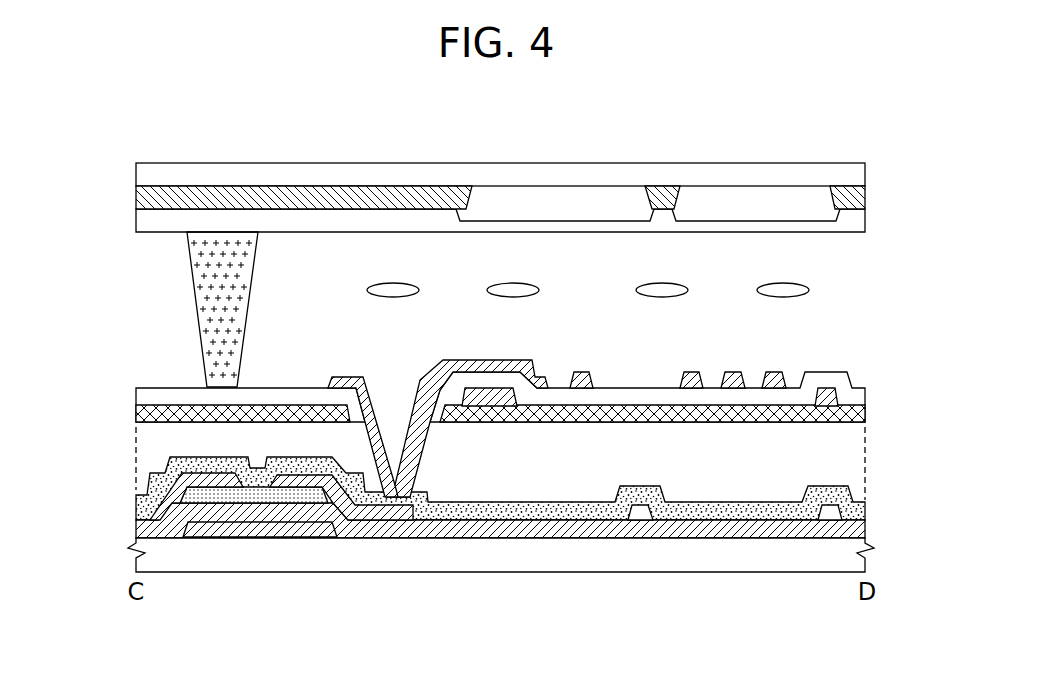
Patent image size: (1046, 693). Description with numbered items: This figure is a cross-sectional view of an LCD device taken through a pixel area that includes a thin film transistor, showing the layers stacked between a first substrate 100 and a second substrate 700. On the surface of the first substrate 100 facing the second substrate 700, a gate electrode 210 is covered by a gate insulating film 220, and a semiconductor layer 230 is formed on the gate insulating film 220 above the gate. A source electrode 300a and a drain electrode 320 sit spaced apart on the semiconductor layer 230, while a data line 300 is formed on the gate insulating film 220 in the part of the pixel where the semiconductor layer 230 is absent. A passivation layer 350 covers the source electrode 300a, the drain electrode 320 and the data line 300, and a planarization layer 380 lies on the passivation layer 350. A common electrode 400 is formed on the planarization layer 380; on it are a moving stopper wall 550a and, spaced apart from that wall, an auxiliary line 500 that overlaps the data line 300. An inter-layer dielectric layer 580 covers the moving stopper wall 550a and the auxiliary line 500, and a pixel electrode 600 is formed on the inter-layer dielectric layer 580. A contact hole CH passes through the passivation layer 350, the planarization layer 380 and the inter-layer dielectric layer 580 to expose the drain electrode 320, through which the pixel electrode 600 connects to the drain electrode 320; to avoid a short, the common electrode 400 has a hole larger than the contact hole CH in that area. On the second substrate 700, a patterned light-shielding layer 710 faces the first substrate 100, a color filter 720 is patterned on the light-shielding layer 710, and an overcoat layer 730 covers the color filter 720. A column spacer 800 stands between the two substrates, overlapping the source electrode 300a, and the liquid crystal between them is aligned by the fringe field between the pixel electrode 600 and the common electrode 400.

The first substrate 100 is at (853, 553).
The gate electrode 210 is at (260, 532).
The gate insulating film 220 is at (853, 528).
The semiconductor layer 230 is at (278, 497).
The data line 300 is at (638, 510).
The source electrode 300a is at (172, 502).
The drain electrode 320 is at (387, 515).
The contact hole CH is at (413, 470).
The passivation layer 350 is at (847, 510).
The planarization layer 380 is at (850, 458).
The common electrode 400 is at (857, 415).
The auxiliary line 500 is at (830, 395).
The moving stopper wall 550a is at (492, 397).
The inter-layer dielectric layer 580 is at (827, 382).
The pixel electrode 600 is at (462, 362).
The second substrate 700 is at (850, 172).
The light-shielding layer 710 is at (410, 190).
The color filter 720 is at (545, 195).
The overcoat layer 730 is at (852, 221).
The column spacer 800 is at (217, 303).